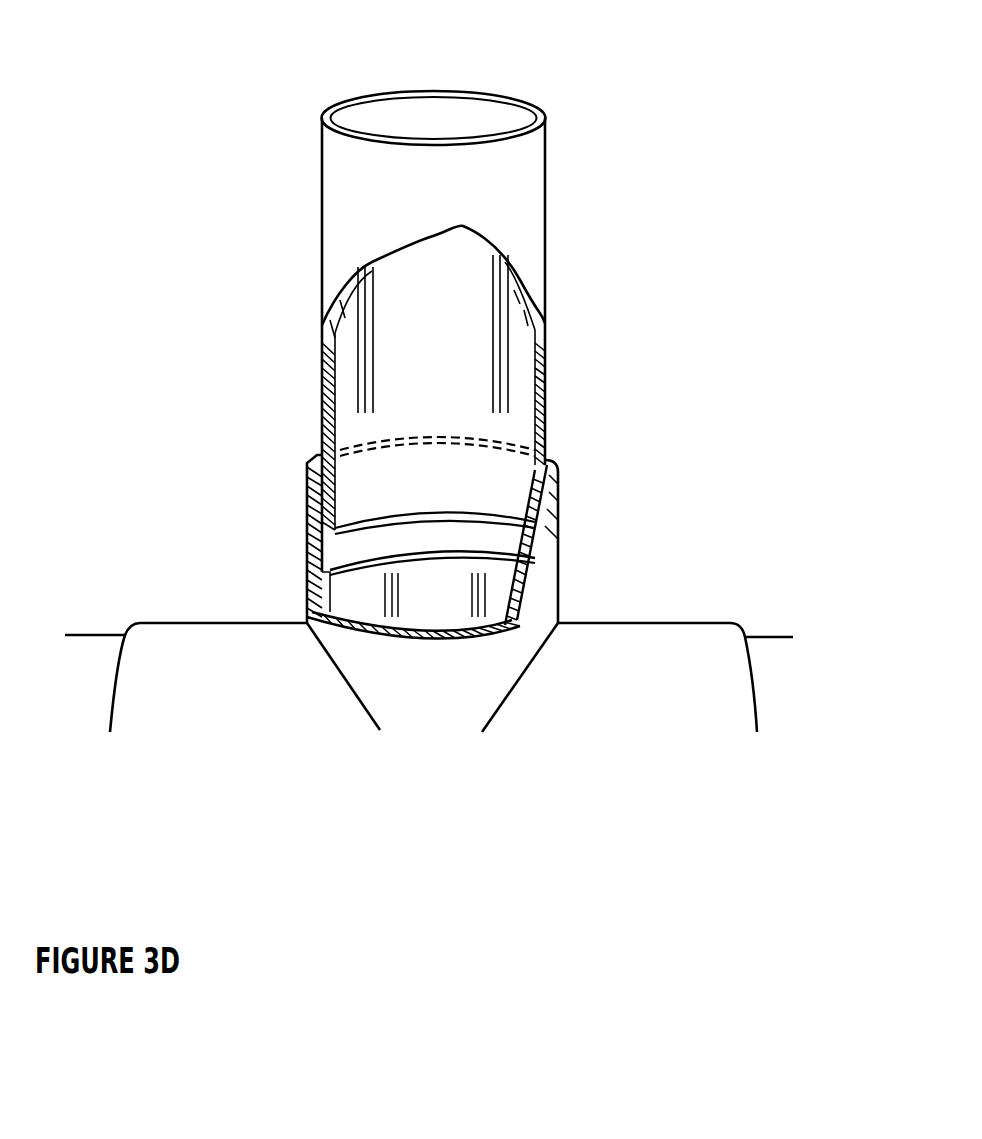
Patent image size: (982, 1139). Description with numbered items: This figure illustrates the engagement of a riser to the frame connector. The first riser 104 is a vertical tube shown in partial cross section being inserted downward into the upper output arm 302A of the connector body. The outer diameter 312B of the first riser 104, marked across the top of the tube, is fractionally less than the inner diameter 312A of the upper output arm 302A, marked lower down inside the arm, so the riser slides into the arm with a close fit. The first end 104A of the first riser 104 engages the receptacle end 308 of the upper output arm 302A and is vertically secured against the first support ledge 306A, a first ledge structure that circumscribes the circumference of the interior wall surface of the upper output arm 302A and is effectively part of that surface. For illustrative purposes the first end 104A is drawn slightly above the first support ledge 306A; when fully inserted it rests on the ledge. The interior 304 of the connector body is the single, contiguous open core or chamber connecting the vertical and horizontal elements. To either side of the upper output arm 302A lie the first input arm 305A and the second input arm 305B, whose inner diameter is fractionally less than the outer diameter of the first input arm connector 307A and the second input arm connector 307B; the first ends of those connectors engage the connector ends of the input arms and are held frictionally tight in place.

The first riser 104 is at (545, 185).
The first end of the first riser 104A is at (507, 520).
The upper output arm 302A is at (307, 500).
The interior 304 is at (322, 559).
The first ledge structure 306A is at (492, 552).
The receptacle end 308 is at (548, 462).
The inner diameter of the upper output arm 312A is at (325, 542).
The outer diameter of the first riser 312B is at (322, 107).
The first input arm 305A is at (612, 623).
The second input arm 305B is at (177, 623).
The first input arm connector 307A is at (757, 630).
The second input arm connector 307B is at (77, 628).